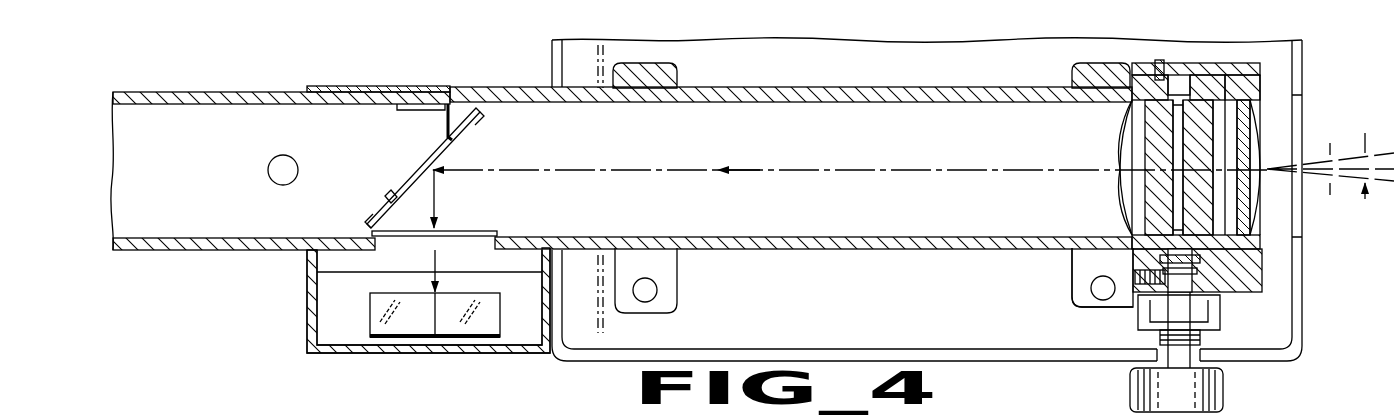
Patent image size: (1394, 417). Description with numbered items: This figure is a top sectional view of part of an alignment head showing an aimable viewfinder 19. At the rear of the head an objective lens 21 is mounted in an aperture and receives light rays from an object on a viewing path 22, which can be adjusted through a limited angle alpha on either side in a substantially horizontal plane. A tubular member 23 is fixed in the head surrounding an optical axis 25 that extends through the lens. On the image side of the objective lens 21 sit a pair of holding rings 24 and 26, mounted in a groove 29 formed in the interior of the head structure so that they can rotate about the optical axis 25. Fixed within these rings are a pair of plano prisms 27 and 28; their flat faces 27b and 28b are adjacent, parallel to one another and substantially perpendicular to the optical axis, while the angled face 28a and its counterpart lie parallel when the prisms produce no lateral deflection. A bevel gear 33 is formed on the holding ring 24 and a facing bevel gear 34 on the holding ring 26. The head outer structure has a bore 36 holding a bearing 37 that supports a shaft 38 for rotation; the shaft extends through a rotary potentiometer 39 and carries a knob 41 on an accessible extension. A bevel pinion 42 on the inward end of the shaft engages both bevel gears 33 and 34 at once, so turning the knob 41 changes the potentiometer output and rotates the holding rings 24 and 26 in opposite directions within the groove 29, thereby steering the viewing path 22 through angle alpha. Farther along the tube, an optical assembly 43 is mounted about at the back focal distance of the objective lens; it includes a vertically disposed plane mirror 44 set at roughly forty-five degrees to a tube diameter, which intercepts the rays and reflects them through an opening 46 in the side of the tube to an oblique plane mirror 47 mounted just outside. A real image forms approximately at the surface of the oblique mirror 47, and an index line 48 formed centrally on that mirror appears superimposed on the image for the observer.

The aimable viewfinder 19 is at (408, 72).
The objective lens 21 is at (1248, 215).
The viewing path 22 is at (1372, 166).
The tubular member 23 is at (900, 90).
The holding ring 24 is at (1230, 78).
The optical axis 25 is at (848, 170).
The holding ring 26 is at (1140, 82).
The plano prism 27 is at (1195, 108).
The flat face 27b is at (1180, 156).
The plano prism 28 is at (1150, 131).
The flat angled face 28a is at (1125, 184).
The flat face 28b is at (1138, 203).
The groove 29 is at (1268, 256).
The bevel gear 33 is at (1214, 292).
The bevel gear 34 is at (1136, 262).
The bore 36 is at (1165, 290).
The bearing 37 is at (1130, 270).
The shaft 38 is at (1168, 282).
The rotary potentiometer 39 is at (1205, 325).
The knob 41 is at (1222, 398).
The bevel pinion 42 is at (1160, 246).
The optical assembly 43 is at (377, 202).
The plane mirror 44 is at (466, 128).
The opening 46 is at (490, 232).
The oblique plane mirror 47 is at (372, 313).
The index line 48 is at (446, 325).